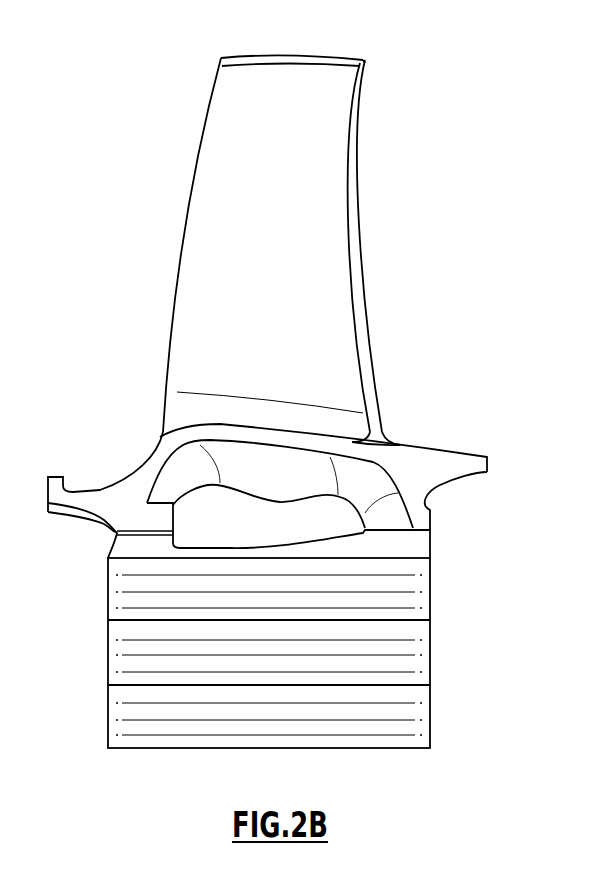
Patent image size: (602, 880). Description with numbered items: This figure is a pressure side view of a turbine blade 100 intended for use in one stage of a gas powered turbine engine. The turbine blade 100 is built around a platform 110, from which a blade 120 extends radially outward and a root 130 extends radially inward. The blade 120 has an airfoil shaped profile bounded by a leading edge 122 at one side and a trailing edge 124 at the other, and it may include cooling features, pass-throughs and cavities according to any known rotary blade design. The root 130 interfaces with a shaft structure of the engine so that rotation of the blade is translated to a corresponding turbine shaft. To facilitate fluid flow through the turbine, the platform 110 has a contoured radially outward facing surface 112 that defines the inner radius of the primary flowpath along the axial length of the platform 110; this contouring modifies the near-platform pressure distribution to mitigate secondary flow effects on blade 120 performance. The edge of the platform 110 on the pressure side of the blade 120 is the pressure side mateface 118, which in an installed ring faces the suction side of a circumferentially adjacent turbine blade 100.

The turbine blade 100 is at (314, 401).
The platform 110 is at (133, 491).
The contoured radially outward facing surface 112 is at (398, 443).
The pressure side mateface 118 is at (445, 468).
The blade 120 is at (208, 190).
The leading edge 122 is at (177, 280).
The trailing edge 124 is at (353, 232).
The root 130 is at (403, 648).